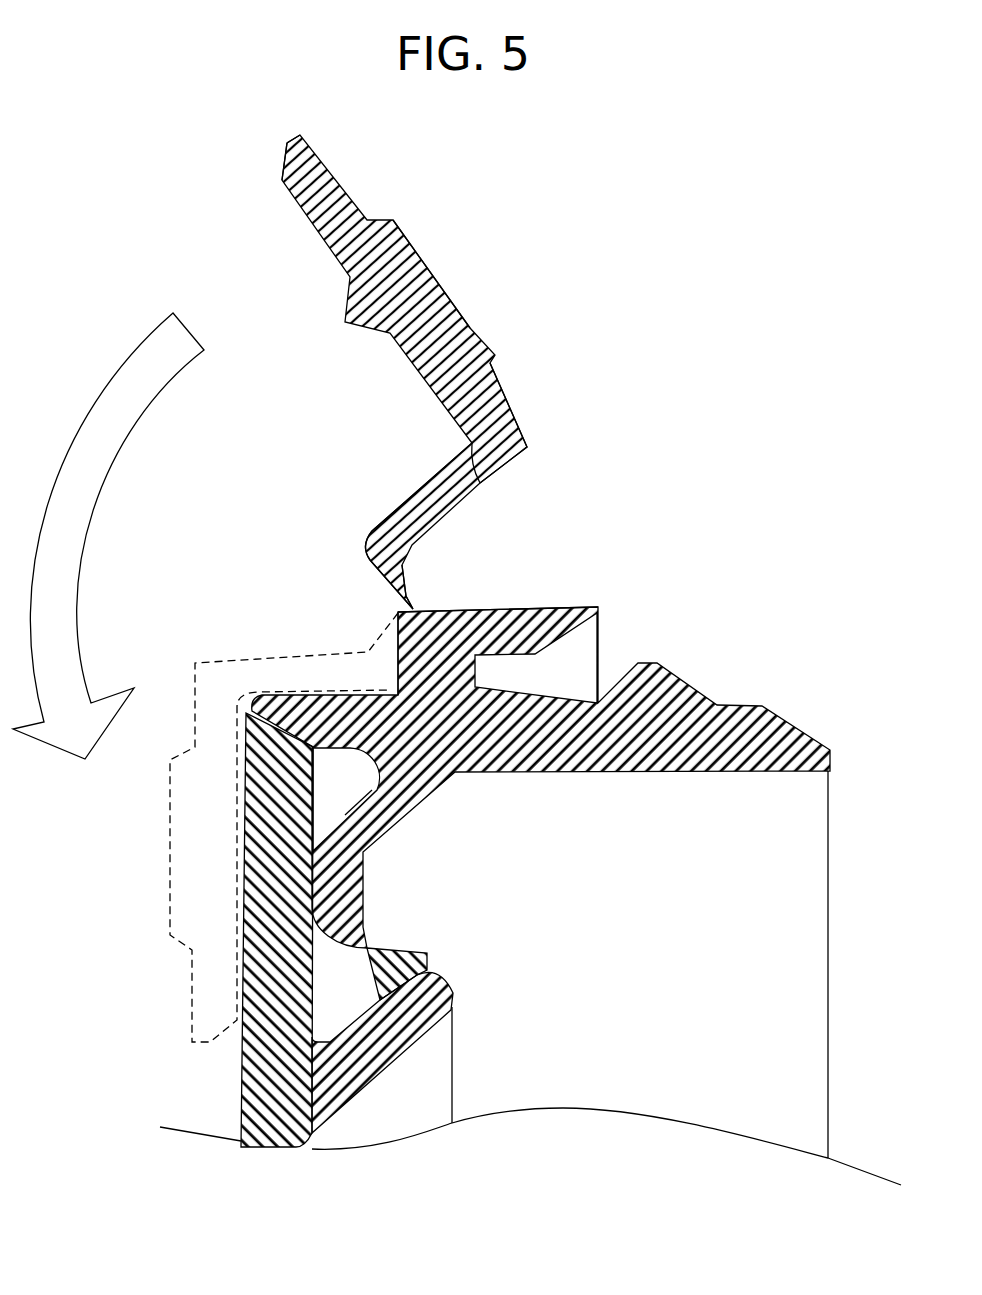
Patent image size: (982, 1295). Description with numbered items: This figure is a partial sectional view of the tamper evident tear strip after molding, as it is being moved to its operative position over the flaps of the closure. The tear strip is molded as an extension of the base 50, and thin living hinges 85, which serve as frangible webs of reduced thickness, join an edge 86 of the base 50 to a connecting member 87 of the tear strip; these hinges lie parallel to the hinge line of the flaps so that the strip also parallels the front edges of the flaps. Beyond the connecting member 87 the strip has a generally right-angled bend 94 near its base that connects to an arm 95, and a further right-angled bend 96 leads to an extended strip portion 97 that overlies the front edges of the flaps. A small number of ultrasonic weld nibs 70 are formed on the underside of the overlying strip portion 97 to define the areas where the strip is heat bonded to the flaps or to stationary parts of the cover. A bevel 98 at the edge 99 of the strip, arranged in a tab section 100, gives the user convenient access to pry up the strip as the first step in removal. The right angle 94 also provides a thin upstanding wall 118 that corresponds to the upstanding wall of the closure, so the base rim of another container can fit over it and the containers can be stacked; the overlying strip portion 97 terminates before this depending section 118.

The tab section 100 is at (206, 119).
The base 50 is at (322, 706).
The ultrasonic weld nibs 70 is at (348, 296).
The living hinges 85 is at (422, 600).
The edge of the base 86 is at (470, 607).
The connecting member 87 is at (392, 615).
The right-angled bend 94 is at (371, 533).
The arm 95 is at (437, 474).
The further right-angled bend 96 is at (496, 414).
The extended strip portion 97 is at (437, 273).
The bevel 98 is at (281, 165).
The edge 99 is at (292, 146).
The upstanding wall 118 is at (479, 490).